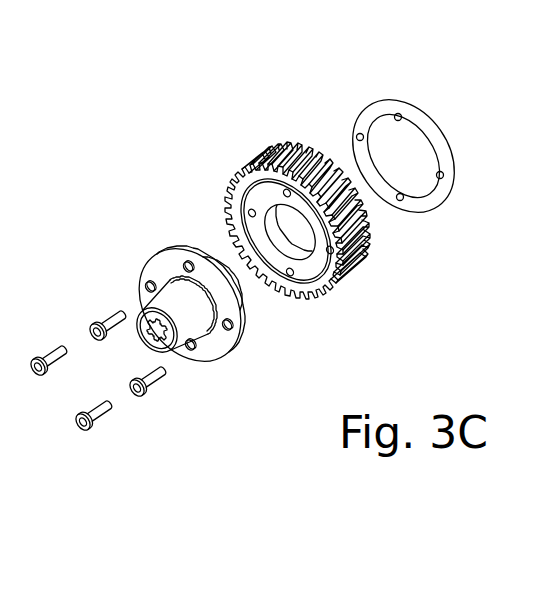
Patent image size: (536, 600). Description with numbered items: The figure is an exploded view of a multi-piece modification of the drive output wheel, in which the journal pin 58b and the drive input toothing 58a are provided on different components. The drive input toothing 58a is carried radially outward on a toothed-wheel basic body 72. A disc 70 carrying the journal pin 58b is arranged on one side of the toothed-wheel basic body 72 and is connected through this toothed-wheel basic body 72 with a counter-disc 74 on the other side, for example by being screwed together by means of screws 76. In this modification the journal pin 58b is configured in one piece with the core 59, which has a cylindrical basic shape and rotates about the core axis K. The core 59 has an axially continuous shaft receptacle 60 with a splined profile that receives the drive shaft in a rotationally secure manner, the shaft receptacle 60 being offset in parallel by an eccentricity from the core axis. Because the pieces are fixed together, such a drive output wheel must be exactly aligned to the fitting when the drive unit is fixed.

The drive input toothing 58a is at (352, 278).
The journal pin 58b is at (185, 330).
The core 59 is at (155, 350).
The shaft receptacle 60 is at (150, 318).
The disc 70 is at (166, 268).
The toothed-wheel basic body 72 is at (265, 203).
The counter-disc 74 is at (375, 108).
The screws 76 is at (98, 421).